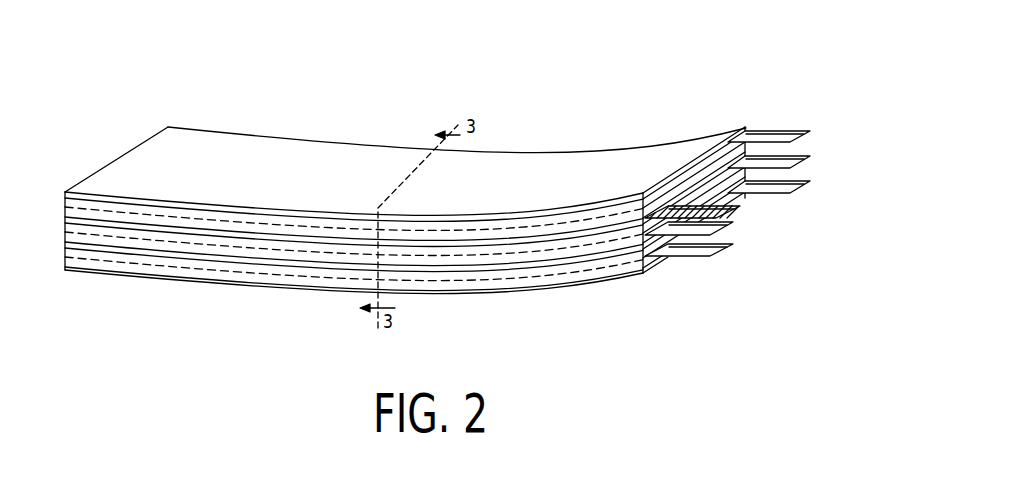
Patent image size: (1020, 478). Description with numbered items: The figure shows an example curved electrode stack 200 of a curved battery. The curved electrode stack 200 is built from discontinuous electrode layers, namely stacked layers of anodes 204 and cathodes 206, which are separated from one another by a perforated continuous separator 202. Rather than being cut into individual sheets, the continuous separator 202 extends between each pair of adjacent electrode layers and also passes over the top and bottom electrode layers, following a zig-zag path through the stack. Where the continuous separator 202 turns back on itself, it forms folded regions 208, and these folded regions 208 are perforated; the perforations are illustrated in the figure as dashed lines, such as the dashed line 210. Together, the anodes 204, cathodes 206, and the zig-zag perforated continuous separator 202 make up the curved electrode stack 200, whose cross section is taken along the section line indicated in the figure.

The curved electrode stack 200 is at (678, 72).
The perforated continuous separator 202 is at (587, 267).
The anode 204 is at (750, 199).
The cathode 206 is at (713, 210).
The folded region of the separator 208 is at (471, 280).
The dashed line 210 is at (537, 268).